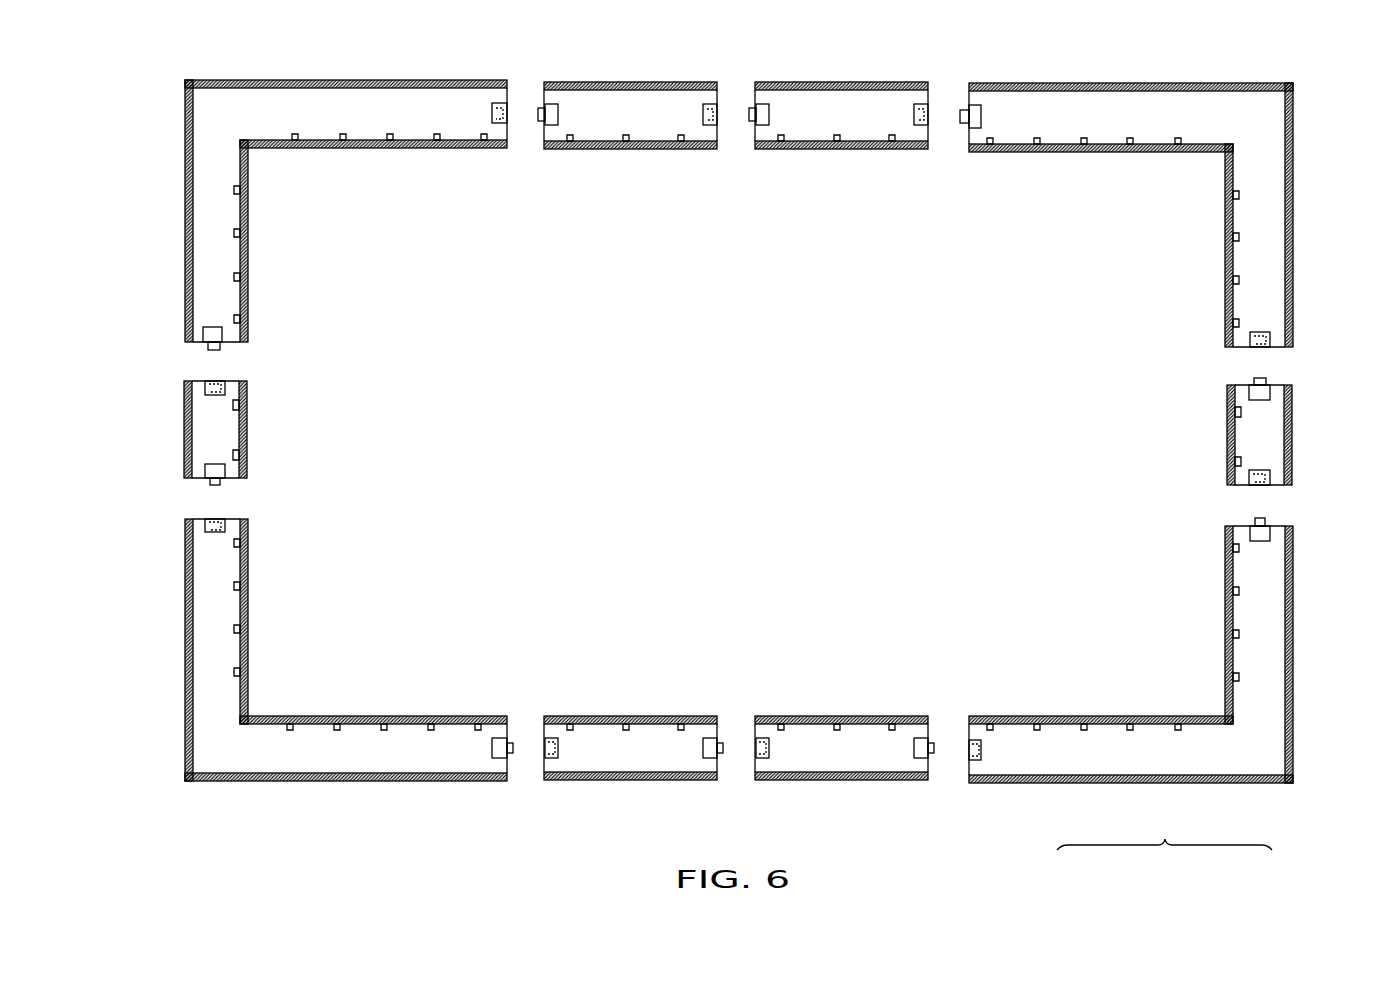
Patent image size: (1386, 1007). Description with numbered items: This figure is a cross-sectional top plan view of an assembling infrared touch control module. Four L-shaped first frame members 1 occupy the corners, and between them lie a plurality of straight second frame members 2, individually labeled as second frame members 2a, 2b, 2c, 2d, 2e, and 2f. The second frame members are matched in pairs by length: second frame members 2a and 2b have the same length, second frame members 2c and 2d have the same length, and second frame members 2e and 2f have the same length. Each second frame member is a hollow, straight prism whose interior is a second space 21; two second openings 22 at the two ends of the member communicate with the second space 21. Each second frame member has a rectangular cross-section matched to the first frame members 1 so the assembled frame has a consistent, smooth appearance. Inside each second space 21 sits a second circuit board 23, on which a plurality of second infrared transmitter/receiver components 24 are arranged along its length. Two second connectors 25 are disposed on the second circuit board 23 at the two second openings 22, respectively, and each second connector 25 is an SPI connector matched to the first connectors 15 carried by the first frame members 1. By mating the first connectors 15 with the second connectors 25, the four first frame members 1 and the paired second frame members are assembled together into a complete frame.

The first frame member 1 is at (172, 97).
The first connector 15 is at (492, 149).
The second frame member 2 is at (1164, 845).
The second frame member 2a is at (631, 75).
The second frame member 2b is at (631, 787).
The second frame member 2c is at (842, 75).
The second frame member 2d is at (842, 787).
The second frame member 2e is at (168, 420).
The second frame member 2f is at (1306, 425).
The second space 21 is at (588, 83).
The second opening 22 is at (544, 93).
The second circuit board 23 is at (656, 120).
The second infrared transmitter/receiver component 24 is at (626, 142).
The second connector 25 is at (552, 126).